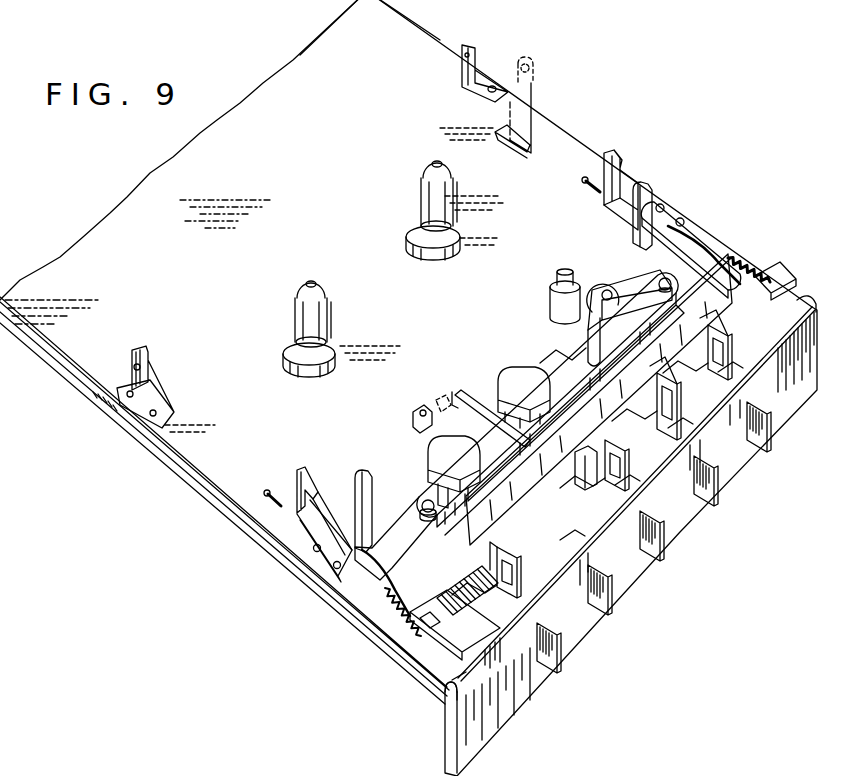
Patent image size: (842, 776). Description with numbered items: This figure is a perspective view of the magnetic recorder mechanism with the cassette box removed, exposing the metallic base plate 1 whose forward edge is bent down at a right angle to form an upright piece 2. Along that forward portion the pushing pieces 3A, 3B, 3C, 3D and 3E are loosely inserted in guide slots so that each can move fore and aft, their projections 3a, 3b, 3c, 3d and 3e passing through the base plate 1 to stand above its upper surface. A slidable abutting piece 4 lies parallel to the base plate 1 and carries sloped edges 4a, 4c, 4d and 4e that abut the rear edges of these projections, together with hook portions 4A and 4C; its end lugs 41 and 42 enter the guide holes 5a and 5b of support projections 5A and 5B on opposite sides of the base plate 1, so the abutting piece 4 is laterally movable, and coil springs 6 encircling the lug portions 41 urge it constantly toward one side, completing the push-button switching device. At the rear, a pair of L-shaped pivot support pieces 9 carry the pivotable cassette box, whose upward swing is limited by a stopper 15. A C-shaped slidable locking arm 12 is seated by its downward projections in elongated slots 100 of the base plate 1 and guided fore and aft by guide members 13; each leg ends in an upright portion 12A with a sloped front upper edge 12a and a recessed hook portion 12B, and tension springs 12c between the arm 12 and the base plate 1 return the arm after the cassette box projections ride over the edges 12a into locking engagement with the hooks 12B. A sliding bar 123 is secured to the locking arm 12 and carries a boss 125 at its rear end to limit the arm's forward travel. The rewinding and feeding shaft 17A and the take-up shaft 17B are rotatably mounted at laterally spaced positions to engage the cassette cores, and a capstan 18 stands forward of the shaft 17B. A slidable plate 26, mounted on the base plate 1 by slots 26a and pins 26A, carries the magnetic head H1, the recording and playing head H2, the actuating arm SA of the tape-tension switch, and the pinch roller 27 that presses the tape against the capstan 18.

The base plate 1 is at (446, 48).
The upright piece 2 is at (488, 732).
The pushing piece 3A is at (558, 660).
The pushing piece 3B is at (603, 617).
The pushing piece 3C is at (655, 566).
The pushing piece 3D is at (703, 508).
The pushing piece 3E is at (755, 455).
The projection 3a is at (503, 630).
The projection 3b is at (570, 534).
The projection 3c is at (628, 477).
The projection 3d is at (684, 418).
The projection 3e is at (742, 367).
The slidable abutting piece 4 is at (605, 418).
The sloped edge 4a is at (520, 582).
The hook portion 4A is at (516, 554).
The sloped edge 4c is at (625, 456).
The hook portion 4C is at (580, 482).
The sloped edge 4d is at (672, 392).
The sloped edge 4e is at (731, 366).
The guide hole 5a is at (443, 673).
The support projection 5A is at (463, 678).
The guide hole 5b is at (772, 280).
The support projection 5B is at (800, 304).
The coil spring 6 is at (466, 618).
The pivot support piece 9 is at (478, 62).
The slidable locking arm 12 is at (700, 240).
The sloped front upper edge 12a is at (609, 157).
The upright portion 12A is at (610, 202).
The hook portion 12B is at (313, 503).
The tension spring 12c is at (733, 243).
The guide member 13 is at (670, 200).
The stopper 15 is at (537, 95).
The rewinding and feeding rotatable shaft 17A is at (294, 318).
The take-up rotatable shaft 17B is at (421, 200).
The capstan 18 is at (553, 278).
The slidable plate 26 is at (540, 365).
The pin 26A is at (622, 270).
The slot 26a is at (664, 280).
The pinch roller 27 is at (605, 287).
The lug portion 41 is at (406, 632).
The lug portion 42 is at (752, 270).
The elongated slot 100 is at (598, 187).
The sliding bar 123 is at (440, 410).
The boss 125 is at (412, 418).
The magnetic head H1 is at (437, 450).
The magnetic head H2 is at (504, 380).
The actuating arm SA is at (473, 397).